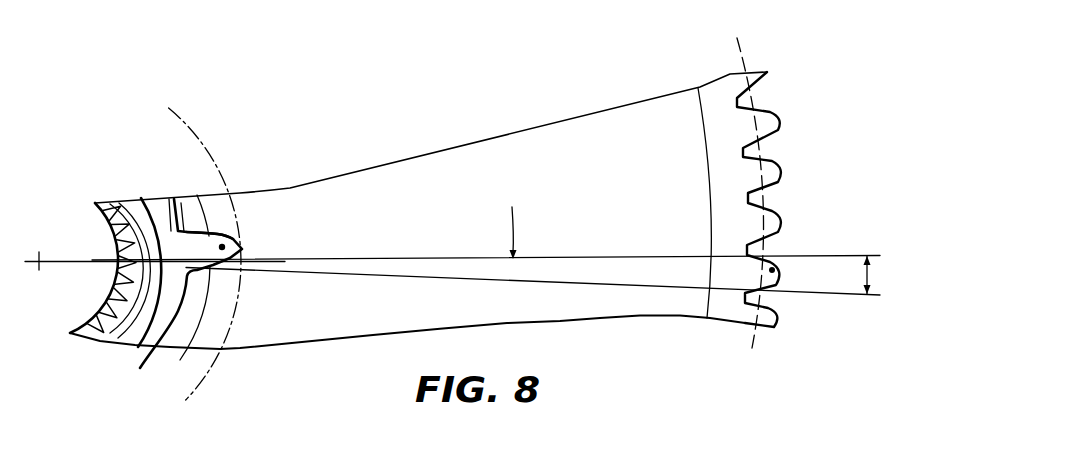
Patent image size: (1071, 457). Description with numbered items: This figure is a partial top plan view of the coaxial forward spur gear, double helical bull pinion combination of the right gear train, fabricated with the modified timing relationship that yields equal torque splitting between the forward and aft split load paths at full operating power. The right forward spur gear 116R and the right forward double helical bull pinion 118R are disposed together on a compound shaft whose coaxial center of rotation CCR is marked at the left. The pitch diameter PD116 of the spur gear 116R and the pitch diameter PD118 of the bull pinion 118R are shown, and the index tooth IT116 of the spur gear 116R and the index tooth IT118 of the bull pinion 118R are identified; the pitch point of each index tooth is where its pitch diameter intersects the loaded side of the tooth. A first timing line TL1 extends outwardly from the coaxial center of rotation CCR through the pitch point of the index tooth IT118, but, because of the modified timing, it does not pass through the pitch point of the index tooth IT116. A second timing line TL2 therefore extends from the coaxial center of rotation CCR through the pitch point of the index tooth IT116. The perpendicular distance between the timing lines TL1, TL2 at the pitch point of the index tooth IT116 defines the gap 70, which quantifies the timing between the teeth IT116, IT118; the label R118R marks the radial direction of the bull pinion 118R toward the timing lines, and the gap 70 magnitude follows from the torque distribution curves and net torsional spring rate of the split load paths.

The right forward spur gear 116R is at (665, 202).
The right forward double helical bull pinion 118R is at (187, 319).
The pitch diameter of the spur gear PD116 is at (750, 53).
The pitch diameter of the double helical bull pinion PD118 is at (212, 206).
The index tooth of the spur gear IT116 is at (769, 249).
The index tooth of the double helical bull pinion IT118 is at (204, 227).
The first timing line TL1 is at (452, 279).
The second timing line TL2 is at (395, 259).
The coaxial center of rotation CCR is at (155, 247).
The radius of rotor 118 forward lobe R118R is at (559, 234).
The gap 70 is at (857, 284).